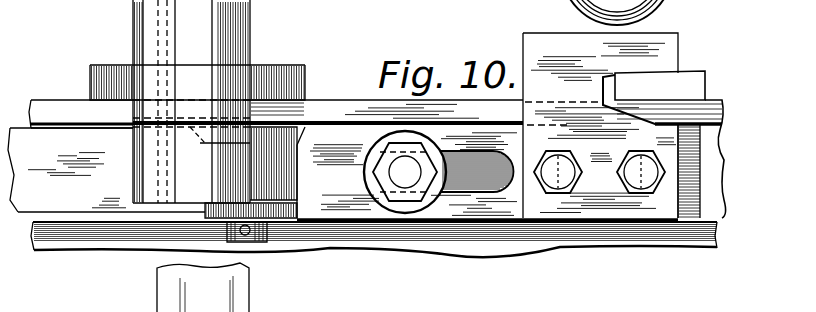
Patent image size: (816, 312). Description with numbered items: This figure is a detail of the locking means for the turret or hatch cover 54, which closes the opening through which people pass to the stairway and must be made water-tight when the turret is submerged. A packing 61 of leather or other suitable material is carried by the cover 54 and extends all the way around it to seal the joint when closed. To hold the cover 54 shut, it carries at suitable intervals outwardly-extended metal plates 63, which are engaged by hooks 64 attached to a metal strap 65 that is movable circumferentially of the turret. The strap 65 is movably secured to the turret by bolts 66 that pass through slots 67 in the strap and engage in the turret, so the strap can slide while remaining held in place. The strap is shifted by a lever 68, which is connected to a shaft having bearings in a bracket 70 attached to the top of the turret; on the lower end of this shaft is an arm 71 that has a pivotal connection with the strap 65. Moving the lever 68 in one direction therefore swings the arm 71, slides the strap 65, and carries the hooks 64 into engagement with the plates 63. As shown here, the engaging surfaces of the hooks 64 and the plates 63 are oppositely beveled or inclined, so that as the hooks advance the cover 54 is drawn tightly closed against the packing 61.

The cover 54 is at (347, 100).
The packing 61 is at (517, 12).
The metal plates 63 is at (697, 72).
The hooks 64 is at (602, 207).
The metal strap 65 is at (512, 212).
The bolts 66 is at (405, 178).
The slots 67 is at (478, 197).
The lever 68 is at (248, 33).
The bracket 70 is at (227, 83).
The arm 71 is at (297, 187).